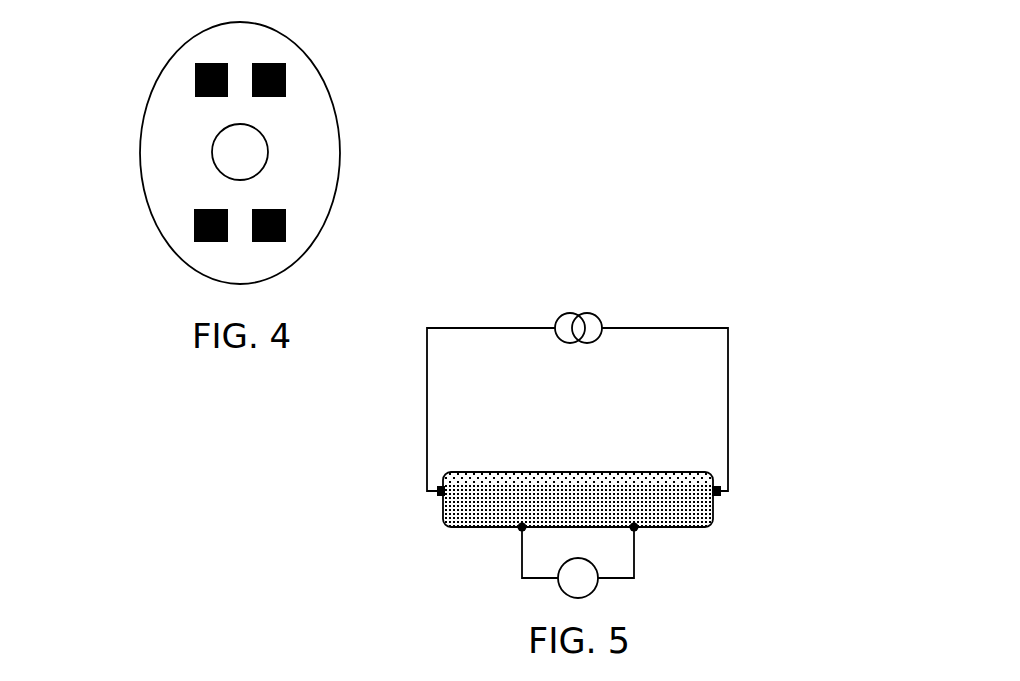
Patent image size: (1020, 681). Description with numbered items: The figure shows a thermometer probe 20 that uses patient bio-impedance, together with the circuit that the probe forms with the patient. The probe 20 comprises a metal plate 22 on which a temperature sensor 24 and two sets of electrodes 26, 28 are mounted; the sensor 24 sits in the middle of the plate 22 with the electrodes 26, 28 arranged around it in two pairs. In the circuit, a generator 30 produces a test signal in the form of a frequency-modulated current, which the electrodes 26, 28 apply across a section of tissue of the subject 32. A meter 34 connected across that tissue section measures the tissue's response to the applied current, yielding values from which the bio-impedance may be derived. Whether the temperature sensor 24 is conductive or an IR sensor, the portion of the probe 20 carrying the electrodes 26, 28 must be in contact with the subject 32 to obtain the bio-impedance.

In FIG. 4, the thermometer probe 20 is at (347, 63).
In FIG. 4, the metal plate 22 is at (167, 158).
In FIG. 4, the temperature sensor 24 is at (262, 153).
In FIG. 4, the electrodes 26 is at (194, 80).
In FIG. 5, the electrodes 26 is at (437, 499).
In FIG. 4, the electrodes 28 is at (194, 227).
In FIG. 5, the generator 30 is at (597, 316).
In FIG. 5, the subject 32 is at (448, 517).
In FIG. 5, the meter 34 is at (598, 585).